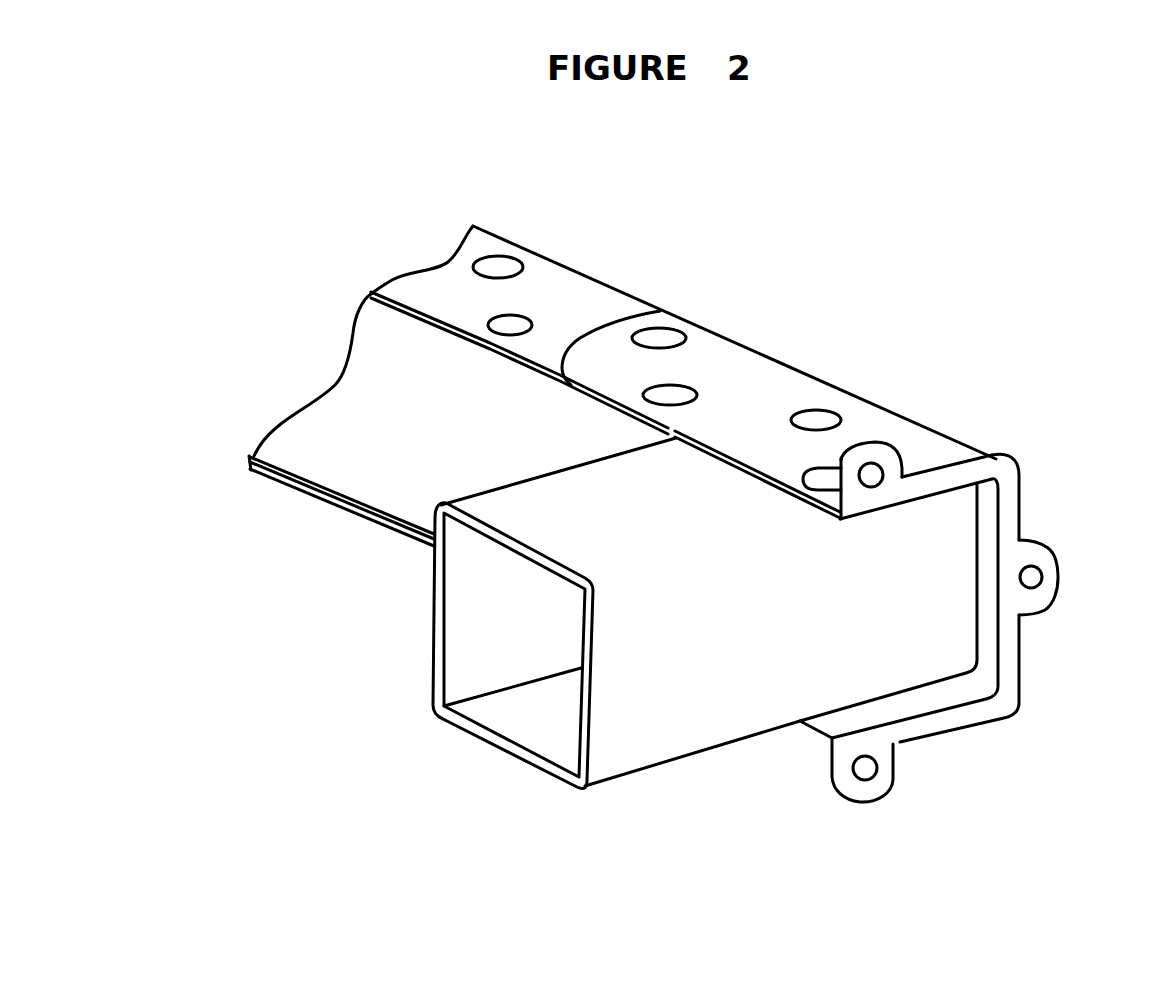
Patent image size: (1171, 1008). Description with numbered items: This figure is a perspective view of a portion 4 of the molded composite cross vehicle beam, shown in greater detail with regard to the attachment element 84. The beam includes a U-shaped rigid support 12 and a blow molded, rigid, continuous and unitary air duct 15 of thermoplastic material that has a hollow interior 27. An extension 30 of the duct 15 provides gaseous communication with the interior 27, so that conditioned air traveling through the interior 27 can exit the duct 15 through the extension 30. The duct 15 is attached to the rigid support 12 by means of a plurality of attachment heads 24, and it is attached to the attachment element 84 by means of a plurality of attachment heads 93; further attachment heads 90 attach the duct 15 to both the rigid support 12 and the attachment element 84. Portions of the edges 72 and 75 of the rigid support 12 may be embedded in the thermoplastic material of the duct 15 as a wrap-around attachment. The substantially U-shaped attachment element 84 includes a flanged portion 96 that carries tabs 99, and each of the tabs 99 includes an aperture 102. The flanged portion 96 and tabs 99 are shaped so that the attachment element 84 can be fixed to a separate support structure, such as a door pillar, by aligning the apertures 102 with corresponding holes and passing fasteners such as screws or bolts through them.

The portion of cross vehicle beam 4 is at (197, 747).
The rigid support 12 is at (593, 292).
The air duct 15 is at (317, 458).
The attachment heads 24 is at (500, 264).
The hollow interior 27 is at (530, 651).
The extension 30 is at (553, 773).
The edge portion 72 is at (437, 328).
The edge 75 is at (353, 514).
The attachment element 84 is at (770, 377).
The attachment heads 90 is at (663, 337).
The attachment heads 93 is at (834, 419).
The flanged portion 96 is at (1007, 665).
The tabs 99 is at (905, 453).
The aperture 102 is at (1033, 578).